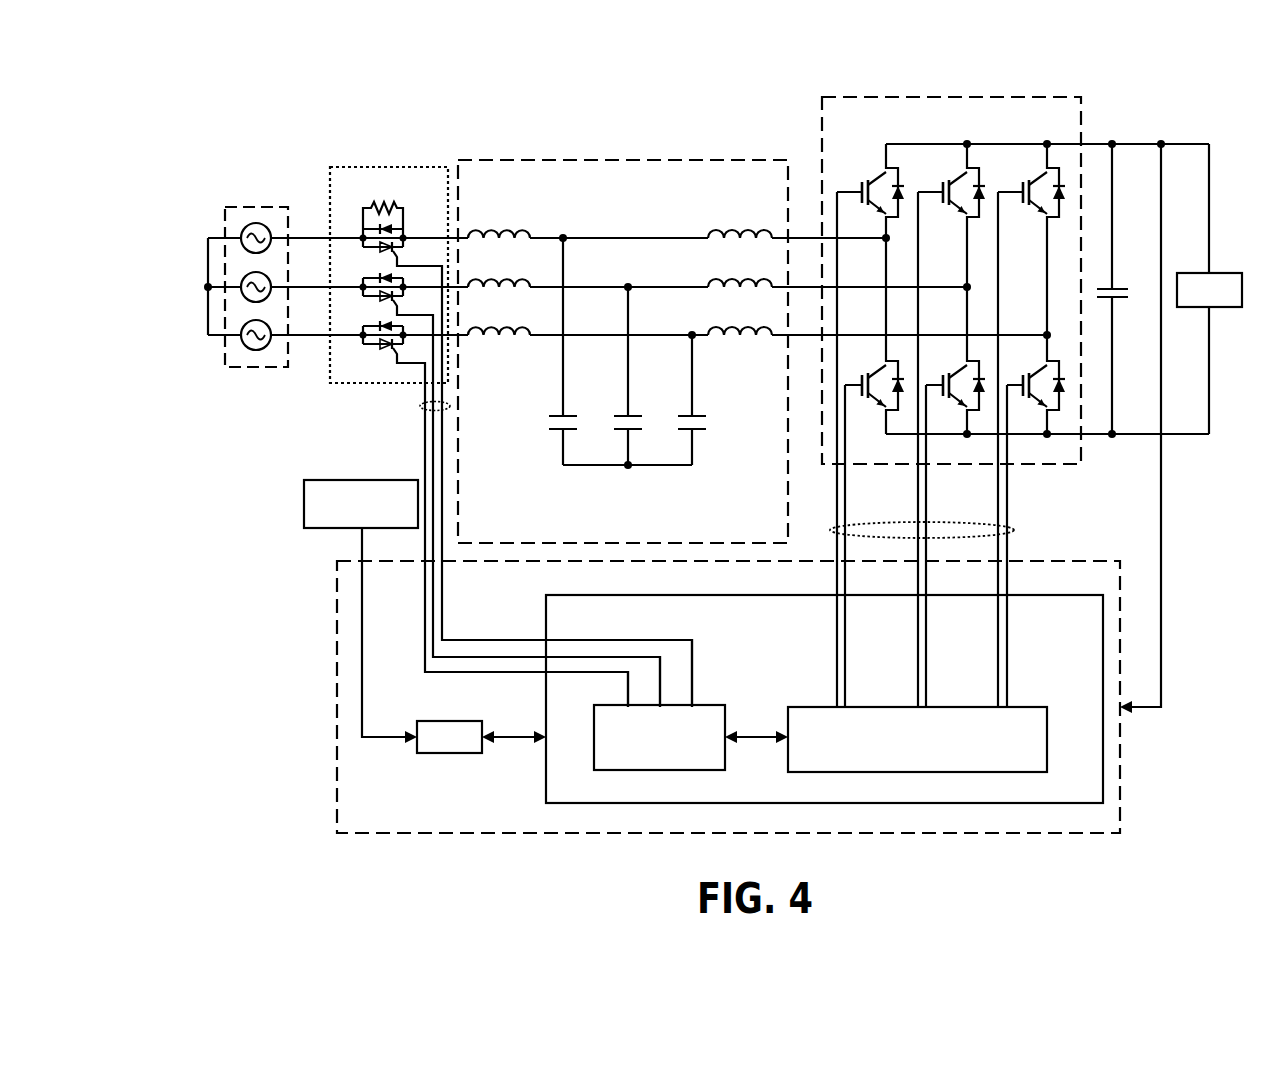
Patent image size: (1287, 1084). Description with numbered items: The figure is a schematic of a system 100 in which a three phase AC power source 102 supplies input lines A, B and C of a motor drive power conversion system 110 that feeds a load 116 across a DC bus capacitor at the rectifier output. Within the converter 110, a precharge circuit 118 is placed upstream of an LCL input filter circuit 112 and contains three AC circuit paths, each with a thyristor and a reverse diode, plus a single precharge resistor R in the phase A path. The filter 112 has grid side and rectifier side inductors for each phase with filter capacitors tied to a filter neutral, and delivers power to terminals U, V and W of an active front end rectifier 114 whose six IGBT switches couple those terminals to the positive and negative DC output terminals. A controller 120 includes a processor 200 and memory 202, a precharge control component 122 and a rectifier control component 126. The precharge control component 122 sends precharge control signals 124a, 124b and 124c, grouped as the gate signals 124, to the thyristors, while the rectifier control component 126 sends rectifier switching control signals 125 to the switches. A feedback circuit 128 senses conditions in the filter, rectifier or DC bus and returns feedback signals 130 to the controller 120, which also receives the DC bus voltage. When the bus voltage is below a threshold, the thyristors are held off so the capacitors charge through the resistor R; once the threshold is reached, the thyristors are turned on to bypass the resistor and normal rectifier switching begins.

The system 100 is at (205, 108).
The three phase AC power source 102 is at (258, 206).
The power conversion system 110 is at (346, 124).
The input filter circuit 112 is at (548, 160).
The rectifier 114 is at (822, 117).
The inverter 116 is at (1216, 273).
The precharge circuit 118 is at (394, 166).
The controller 120 is at (337, 812).
The precharge control component 122 is at (594, 738).
The rectifier controller 124 is at (419, 406).
The precharge control signal 124a is at (693, 647).
The precharge control signal 124b is at (660, 688).
The precharge control signal 124c is at (628, 692).
The rectifier switching control signals 125 is at (1014, 530).
The rectifier control component 126 is at (820, 707).
The feedback circuit 128 is at (352, 480).
The feedback signals 130 is at (362, 707).
The processor 200 is at (465, 721).
The electronic memory 202 is at (592, 595).